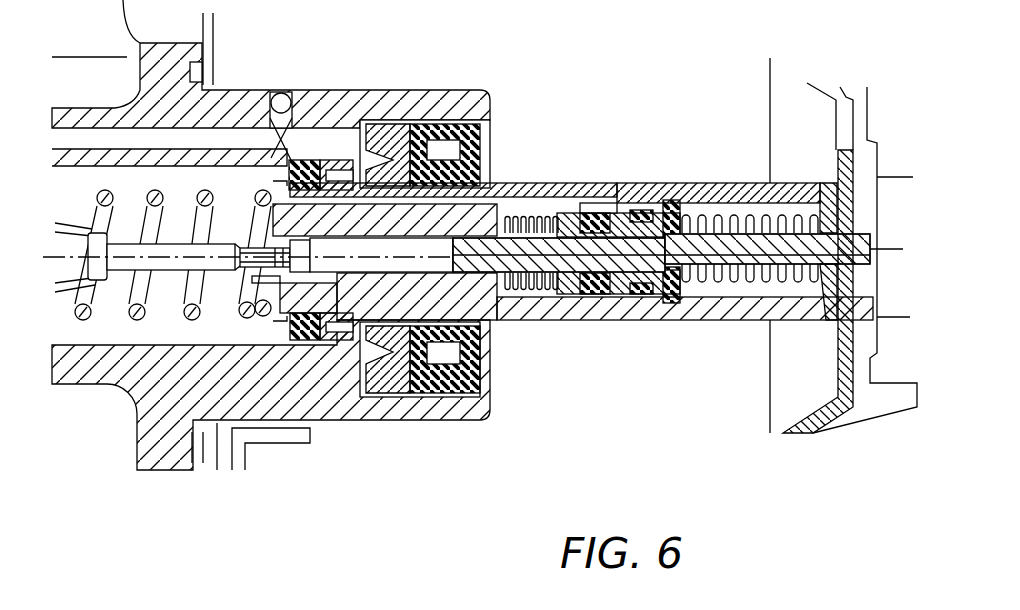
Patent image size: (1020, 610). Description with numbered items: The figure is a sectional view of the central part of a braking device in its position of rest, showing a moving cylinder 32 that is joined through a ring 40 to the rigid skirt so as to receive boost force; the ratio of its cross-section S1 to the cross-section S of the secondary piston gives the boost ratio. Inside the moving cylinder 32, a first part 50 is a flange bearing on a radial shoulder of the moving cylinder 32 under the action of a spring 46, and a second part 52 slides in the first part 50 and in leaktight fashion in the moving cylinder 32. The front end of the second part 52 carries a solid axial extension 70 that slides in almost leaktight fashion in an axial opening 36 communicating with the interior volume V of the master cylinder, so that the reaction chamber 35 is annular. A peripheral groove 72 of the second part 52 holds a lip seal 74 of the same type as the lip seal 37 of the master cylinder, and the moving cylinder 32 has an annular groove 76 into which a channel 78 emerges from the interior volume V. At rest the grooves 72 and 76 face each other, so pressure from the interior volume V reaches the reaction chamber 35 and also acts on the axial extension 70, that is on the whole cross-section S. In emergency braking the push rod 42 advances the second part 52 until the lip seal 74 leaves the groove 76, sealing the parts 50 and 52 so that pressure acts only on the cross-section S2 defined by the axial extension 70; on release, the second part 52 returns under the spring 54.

The moving cylinder 32 is at (730, 190).
The reaction chamber 35 is at (523, 297).
The axial opening 36 is at (345, 262).
The lip seal 37 is at (313, 160).
The ring 40 is at (832, 287).
The push rod 42 is at (887, 207).
The spring 46 is at (775, 215).
The first part 50 is at (682, 200).
The second part 52 is at (757, 264).
The spring 54 is at (522, 212).
The axial extension 70 is at (545, 294).
The peripheral groove 72 is at (620, 203).
The lip seal 74 is at (588, 296).
The annular groove 76 is at (612, 296).
The channel 78 is at (548, 196).
The interior volume V is at (127, 330).
The cross-section S is at (657, 110).
The cross-section S1 is at (168, 13).
The cross-section S2 is at (498, 128).